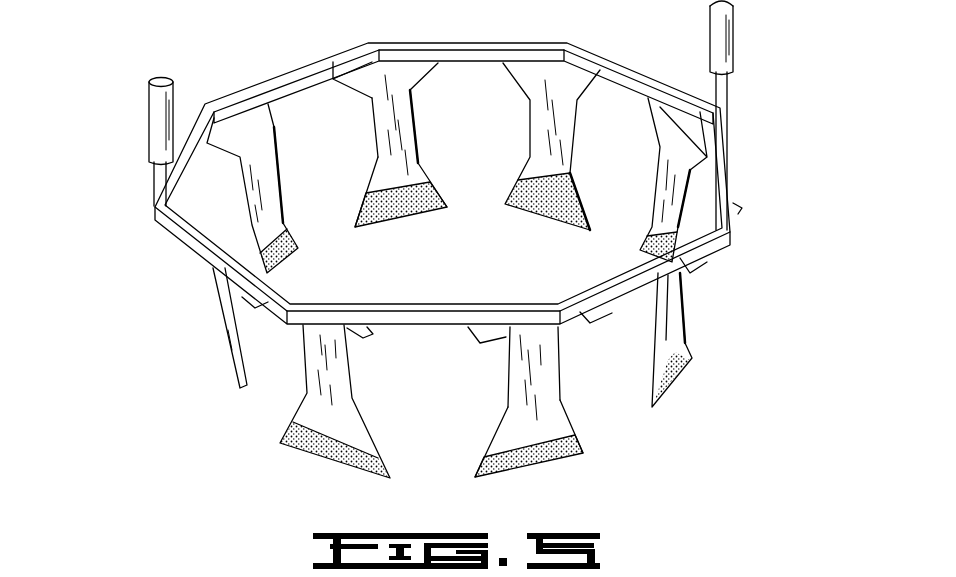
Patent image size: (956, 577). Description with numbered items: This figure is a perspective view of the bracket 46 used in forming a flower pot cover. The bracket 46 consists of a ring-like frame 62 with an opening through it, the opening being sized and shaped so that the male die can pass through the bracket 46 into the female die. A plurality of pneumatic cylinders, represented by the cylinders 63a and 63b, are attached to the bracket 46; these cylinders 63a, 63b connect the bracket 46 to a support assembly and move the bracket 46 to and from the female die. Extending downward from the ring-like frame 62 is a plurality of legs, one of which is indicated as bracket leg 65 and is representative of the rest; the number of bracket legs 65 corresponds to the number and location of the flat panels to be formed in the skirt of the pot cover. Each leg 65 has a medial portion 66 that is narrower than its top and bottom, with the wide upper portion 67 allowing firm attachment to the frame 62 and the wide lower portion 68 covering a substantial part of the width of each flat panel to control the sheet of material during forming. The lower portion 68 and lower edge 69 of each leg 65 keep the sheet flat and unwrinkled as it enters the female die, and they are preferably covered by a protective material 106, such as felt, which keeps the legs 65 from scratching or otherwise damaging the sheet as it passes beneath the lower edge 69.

The bracket 46 is at (207, 58).
The ring-like frame 62 is at (637, 68).
The pneumatic cylinder 63a is at (152, 133).
The pneumatic cylinder 63b is at (735, 43).
The bracket leg 65 is at (307, 396).
The medial portion 66 is at (413, 127).
The upper portion 67 is at (360, 101).
The lower portion 68 is at (410, 184).
The lower edge 69 is at (412, 211).
The protective material 106 is at (388, 214).